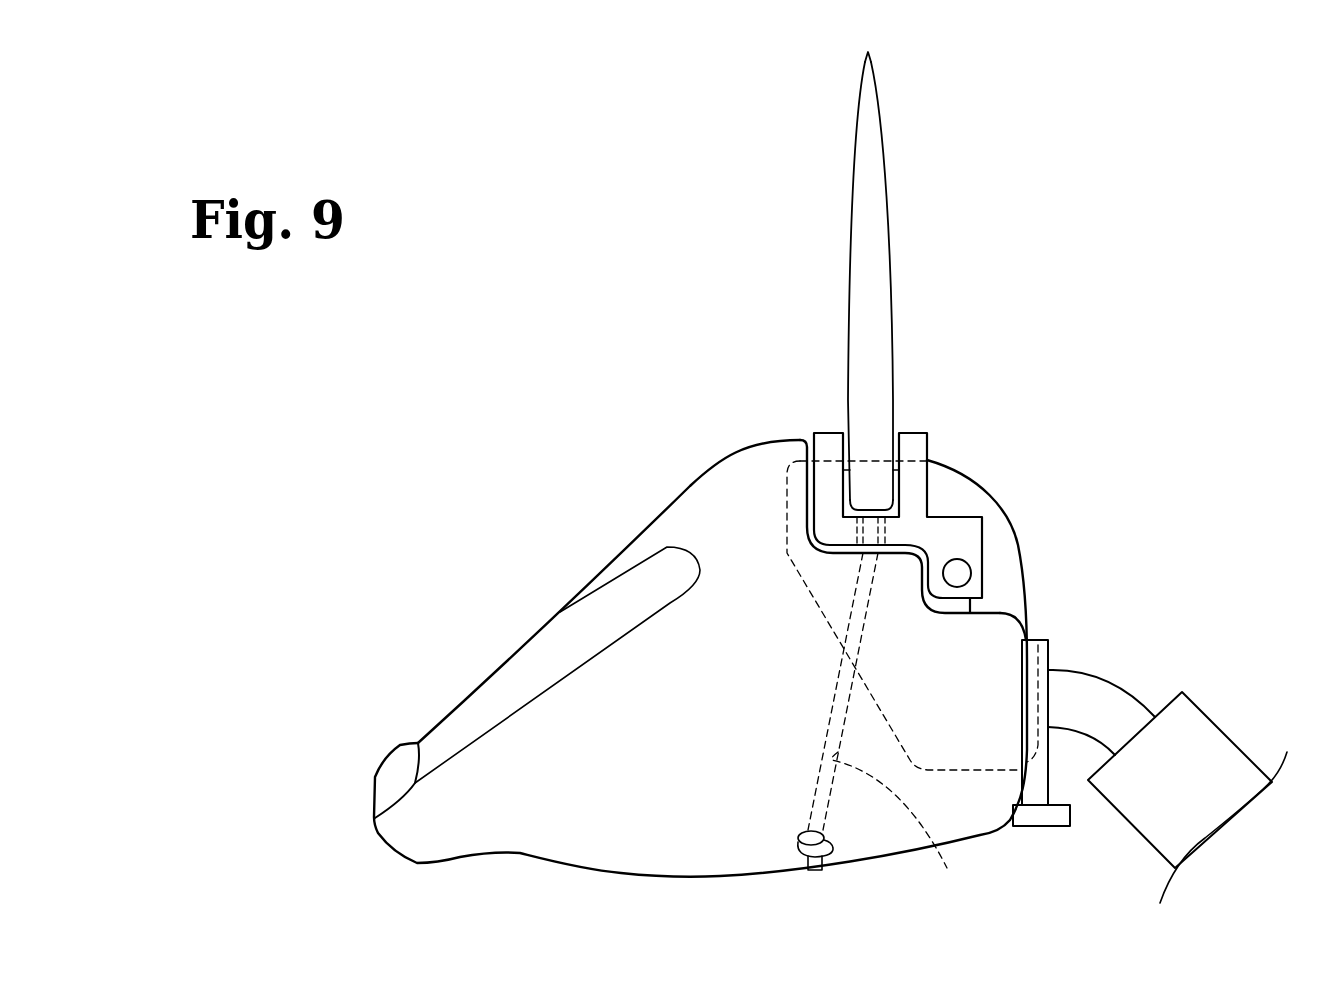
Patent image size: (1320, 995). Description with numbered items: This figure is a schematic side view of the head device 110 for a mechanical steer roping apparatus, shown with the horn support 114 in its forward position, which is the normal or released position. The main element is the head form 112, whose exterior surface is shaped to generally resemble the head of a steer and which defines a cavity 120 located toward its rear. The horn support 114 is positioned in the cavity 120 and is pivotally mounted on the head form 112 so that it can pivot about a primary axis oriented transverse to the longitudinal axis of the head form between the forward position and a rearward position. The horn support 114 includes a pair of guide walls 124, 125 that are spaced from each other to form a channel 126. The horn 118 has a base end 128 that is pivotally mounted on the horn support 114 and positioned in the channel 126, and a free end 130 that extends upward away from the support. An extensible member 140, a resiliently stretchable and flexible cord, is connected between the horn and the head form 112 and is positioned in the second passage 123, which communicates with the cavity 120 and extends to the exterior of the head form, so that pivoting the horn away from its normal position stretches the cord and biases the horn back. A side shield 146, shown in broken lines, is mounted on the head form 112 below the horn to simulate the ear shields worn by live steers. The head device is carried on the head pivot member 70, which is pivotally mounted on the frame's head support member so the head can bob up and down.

The head pivot member 70 is at (1098, 697).
The head device 110 is at (692, 361).
The head form 112 is at (655, 812).
The horn support 114 is at (913, 472).
The second horn 118 is at (872, 238).
The cavity 120 is at (807, 492).
The second passage 123 is at (909, 836).
The guide wall 124 is at (828, 443).
The guide wall 125 is at (915, 440).
The channel 126 is at (912, 403).
The base end 128 is at (872, 500).
The free end 130 is at (870, 62).
The extensible member 140 is at (810, 866).
The side shield 146 is at (1024, 570).